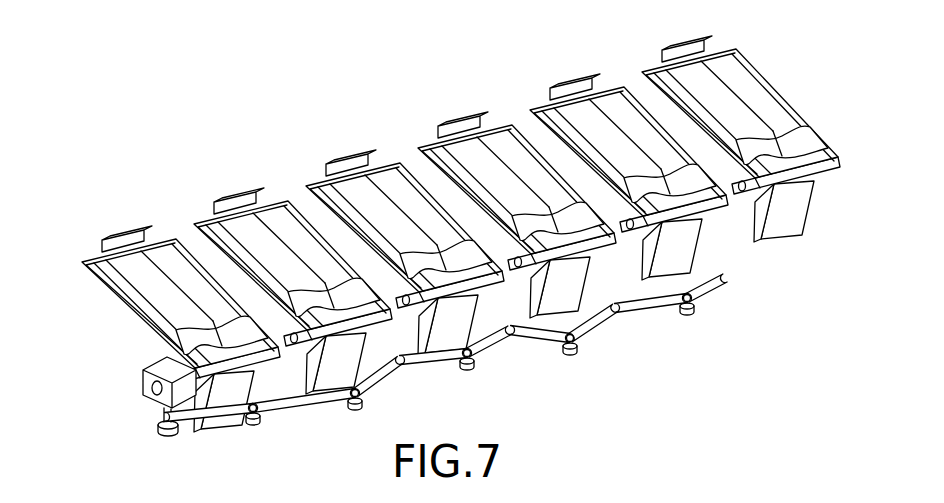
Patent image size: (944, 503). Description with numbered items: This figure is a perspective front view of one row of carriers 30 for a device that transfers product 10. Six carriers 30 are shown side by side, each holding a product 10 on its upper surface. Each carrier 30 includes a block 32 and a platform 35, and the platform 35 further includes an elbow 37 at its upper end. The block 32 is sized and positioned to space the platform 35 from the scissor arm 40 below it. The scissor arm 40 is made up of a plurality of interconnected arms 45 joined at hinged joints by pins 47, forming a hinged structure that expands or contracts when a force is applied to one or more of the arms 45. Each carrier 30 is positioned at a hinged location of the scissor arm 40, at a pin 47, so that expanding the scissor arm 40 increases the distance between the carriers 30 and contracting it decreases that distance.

The product 10 is at (165, 302).
The carrier 30 is at (450, 252).
The block 32 is at (745, 247).
The platform 35 is at (836, 154).
The elbow 37 is at (407, 144).
The scissor arm 40 is at (658, 298).
The arm 45 is at (703, 283).
The pin 47 is at (695, 312).